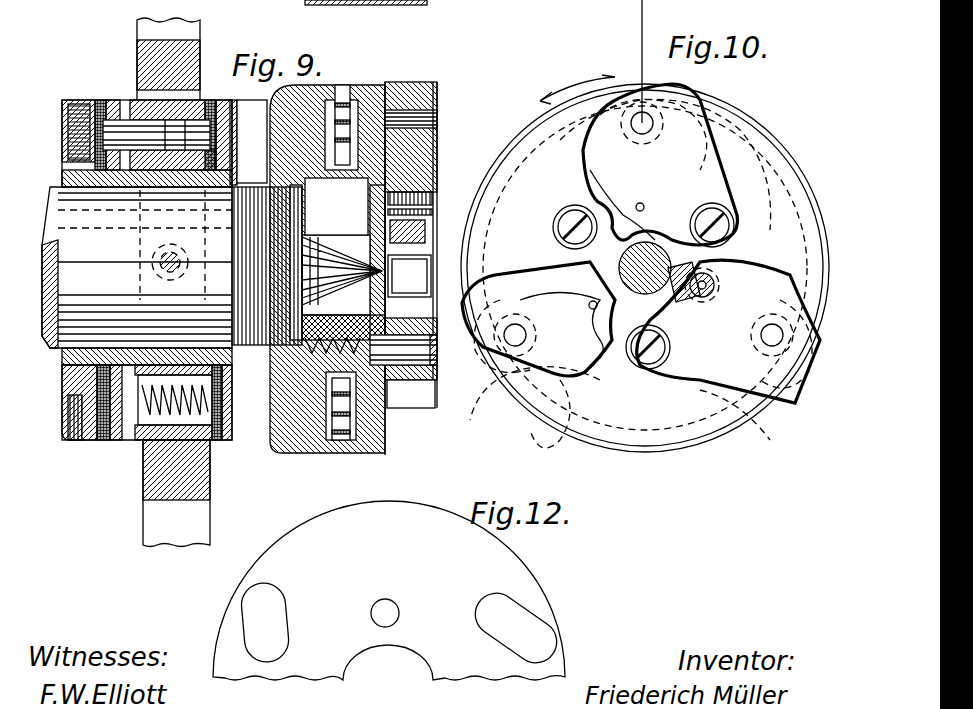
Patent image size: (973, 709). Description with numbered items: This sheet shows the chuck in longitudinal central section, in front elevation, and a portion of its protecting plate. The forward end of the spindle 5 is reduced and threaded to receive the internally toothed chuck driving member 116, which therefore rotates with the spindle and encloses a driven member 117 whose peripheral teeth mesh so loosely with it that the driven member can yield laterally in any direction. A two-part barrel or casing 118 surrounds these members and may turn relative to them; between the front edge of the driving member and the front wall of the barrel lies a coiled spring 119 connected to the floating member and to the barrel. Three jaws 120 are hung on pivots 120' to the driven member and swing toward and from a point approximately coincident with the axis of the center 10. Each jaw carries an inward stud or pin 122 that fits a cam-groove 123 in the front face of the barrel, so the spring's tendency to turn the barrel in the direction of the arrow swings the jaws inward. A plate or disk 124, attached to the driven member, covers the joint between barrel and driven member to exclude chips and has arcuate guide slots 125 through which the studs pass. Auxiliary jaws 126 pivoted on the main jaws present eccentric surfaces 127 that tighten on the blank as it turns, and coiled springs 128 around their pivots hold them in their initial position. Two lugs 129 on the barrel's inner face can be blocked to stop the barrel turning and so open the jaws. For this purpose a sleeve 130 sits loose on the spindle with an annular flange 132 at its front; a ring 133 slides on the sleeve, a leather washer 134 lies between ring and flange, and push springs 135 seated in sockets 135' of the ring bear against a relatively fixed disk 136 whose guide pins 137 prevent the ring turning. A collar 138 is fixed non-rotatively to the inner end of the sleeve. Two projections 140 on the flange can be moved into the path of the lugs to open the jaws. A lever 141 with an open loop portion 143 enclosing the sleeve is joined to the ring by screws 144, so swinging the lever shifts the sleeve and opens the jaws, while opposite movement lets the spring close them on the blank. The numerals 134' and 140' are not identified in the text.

In FIG. 9, the spindle 5 is at (82, 263).
In FIG. 9, the center 10 is at (332, 265).
In FIG. 10, the center 10 is at (736, 232).
In FIG. 9, the chuck driving member 116 is at (318, 98).
In FIG. 9, the driven member 117 is at (336, 206).
In FIG. 9, the barrel or casing 118 is at (362, 8).
In FIG. 9, the coiled spring 119 is at (342, 128).
In FIG. 9, the jaws 120 is at (487, 236).
In FIG. 10, the jaws 120 is at (641, 243).
In FIG. 9, the pivots 120' is at (427, 354).
In FIG. 10, the pivots 120' is at (551, 276).
In FIG. 9, the stud or pin 122 is at (440, 90).
In FIG. 10, the stud or pin 122 is at (520, 335).
In FIG. 9, the cam-groove 123 is at (390, 80).
In FIG. 10, the cam-groove 123 is at (735, 167).
In FIG. 9, the plate or disk 124 is at (533, 390).
In FIG. 10, the plate or disk 124 is at (560, 420).
In FIG. 12, the plate or disk 124 is at (389, 590).
In FIG. 10, the arcuate guide slots 125 is at (715, 113).
In FIG. 12, the arcuate guide slots 125 is at (500, 618).
In FIG. 9, the auxiliary jaws 126 is at (543, 262).
In FIG. 10, the auxiliary jaws 126 is at (640, 268).
In FIG. 10, the eccentric surfaces 127 is at (665, 300).
In FIG. 9, the coiled springs 128 is at (444, 185).
In FIG. 10, the coiled springs 128 is at (645, 268).
In FIG. 9, the projections or lugs 129 is at (290, 495).
In FIG. 9, the sleeve 130 is at (110, 188).
In FIG. 9, the annular flange 132 is at (240, 462).
In FIG. 9, the ring 133 is at (113, 462).
In FIG. 9, the washer 134 is at (81, 50).
In FIG. 9, the bolt 134' is at (224, 50).
In FIG. 9, the push springs 135 is at (187, 512).
In FIG. 9, the sockets 135' is at (168, 50).
In FIG. 9, the disk 136 is at (98, 442).
In FIG. 9, the guide pins 137 is at (130, 118).
In FIG. 9, the collar 138 is at (62, 102).
In FIG. 9, the projections 140 is at (267, 212).
In FIG. 12, the projections 140 is at (316, 500).
In FIG. 9, the gear 140' is at (274, 10).
In FIG. 9, the lever 141 is at (143, 533).
In FIG. 9, the open or loop portion 143 is at (217, 503).
In FIG. 9, the screws 144 is at (170, 244).